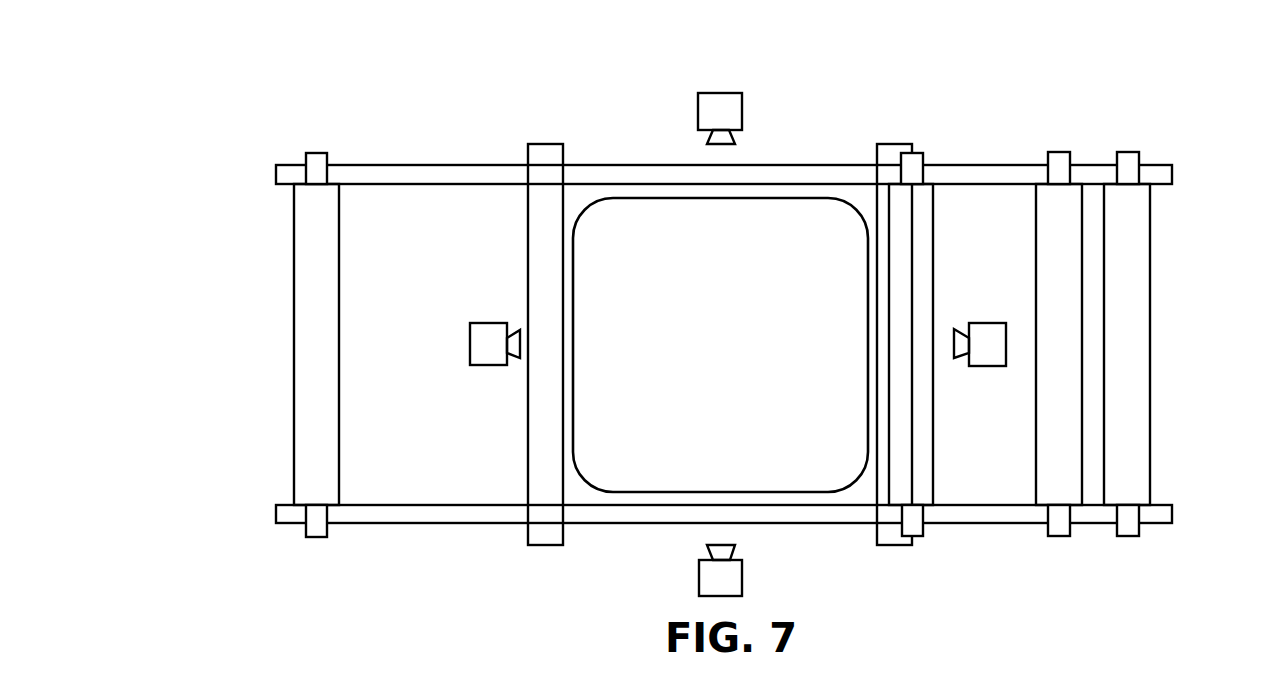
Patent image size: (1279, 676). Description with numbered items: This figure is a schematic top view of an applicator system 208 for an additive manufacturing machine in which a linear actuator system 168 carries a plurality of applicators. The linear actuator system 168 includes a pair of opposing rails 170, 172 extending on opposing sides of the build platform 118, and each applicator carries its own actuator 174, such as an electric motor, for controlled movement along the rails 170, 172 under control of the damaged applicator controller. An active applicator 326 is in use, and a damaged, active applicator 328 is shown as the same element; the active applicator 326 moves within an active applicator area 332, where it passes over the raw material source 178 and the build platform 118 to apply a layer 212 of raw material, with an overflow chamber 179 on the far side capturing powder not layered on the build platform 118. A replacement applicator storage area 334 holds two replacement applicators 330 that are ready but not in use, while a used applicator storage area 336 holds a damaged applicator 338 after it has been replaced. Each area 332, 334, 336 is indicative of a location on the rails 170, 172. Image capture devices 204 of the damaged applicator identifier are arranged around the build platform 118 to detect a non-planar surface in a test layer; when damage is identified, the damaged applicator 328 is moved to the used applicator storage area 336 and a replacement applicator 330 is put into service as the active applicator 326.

The build platform 118 is at (735, 243).
The linear actuator system 168 is at (715, 321).
The rail 170 is at (509, 174).
The rail 172 is at (487, 512).
The actuator 174 is at (315, 160).
The raw material source 178 is at (890, 151).
The overflow chamber 179 is at (553, 158).
The image capture device 204 is at (718, 115).
The applicator system 208 is at (715, 309).
The layer of raw material 212 is at (655, 457).
The active applicator 326 is at (971, 282).
The damaged, active applicator 328 is at (937, 223).
The replacement applicator 330 is at (1087, 241).
The active applicator area 332 is at (915, 70).
The replacement applicator storage area 334 is at (1145, 147).
The used applicator storage area 336 is at (473, 147).
The damaged applicator 338 is at (350, 241).